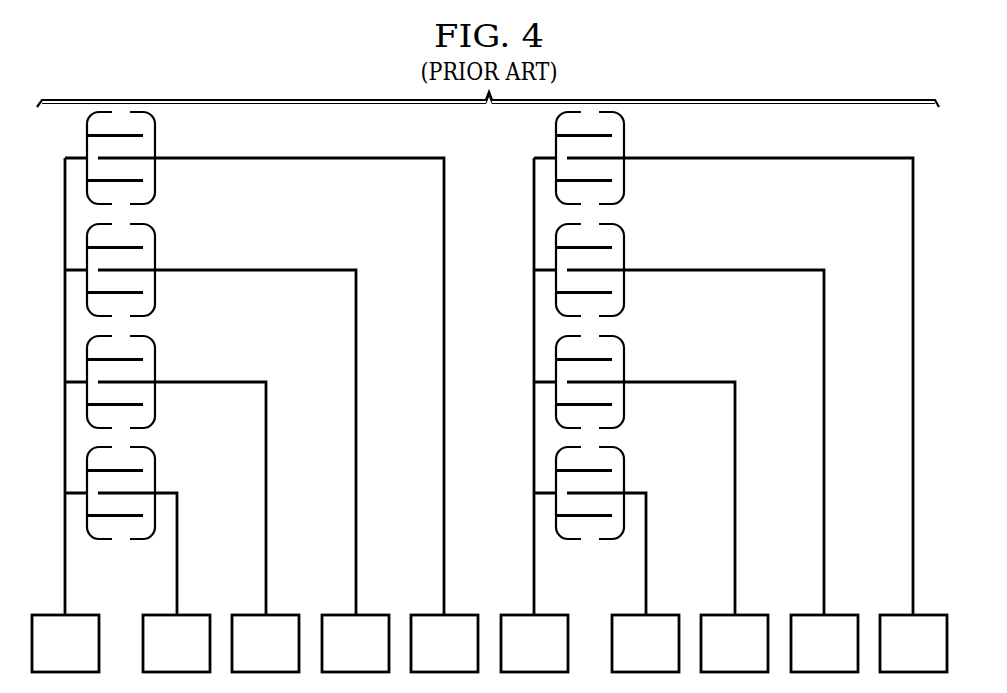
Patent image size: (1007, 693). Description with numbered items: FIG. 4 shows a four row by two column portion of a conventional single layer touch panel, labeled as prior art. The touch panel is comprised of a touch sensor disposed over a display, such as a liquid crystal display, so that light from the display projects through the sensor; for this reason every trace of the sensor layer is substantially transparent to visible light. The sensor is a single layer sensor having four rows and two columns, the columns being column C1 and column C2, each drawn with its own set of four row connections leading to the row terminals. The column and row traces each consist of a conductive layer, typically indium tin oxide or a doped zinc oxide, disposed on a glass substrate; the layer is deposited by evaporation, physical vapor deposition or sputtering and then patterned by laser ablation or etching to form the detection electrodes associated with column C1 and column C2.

The column C1 is at (65, 415).
The column C2 is at (534, 415).